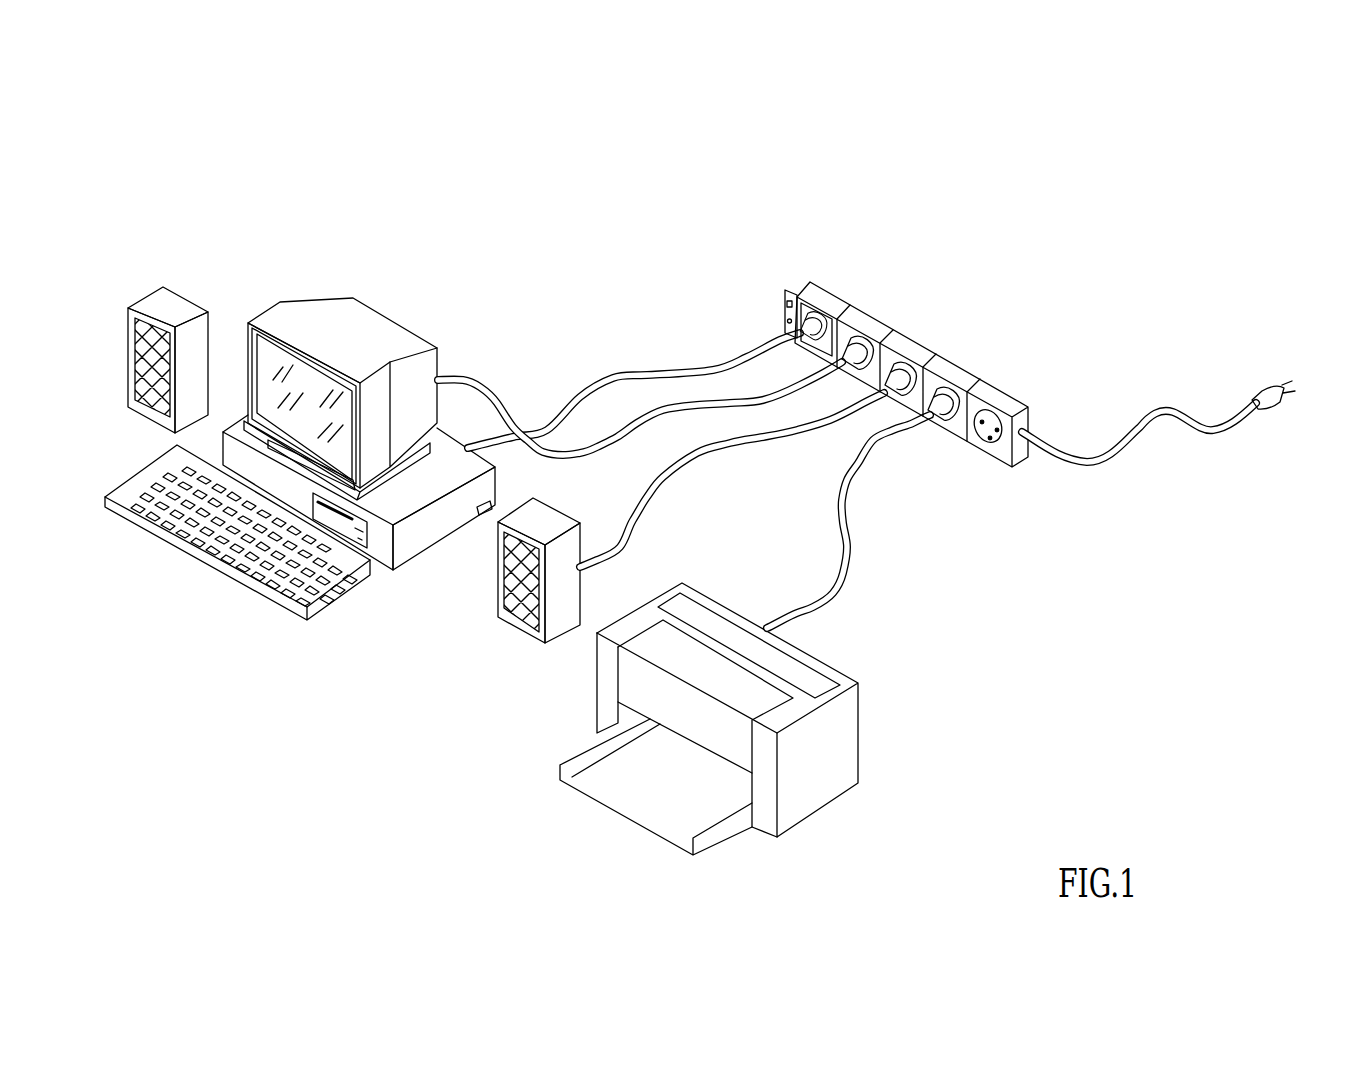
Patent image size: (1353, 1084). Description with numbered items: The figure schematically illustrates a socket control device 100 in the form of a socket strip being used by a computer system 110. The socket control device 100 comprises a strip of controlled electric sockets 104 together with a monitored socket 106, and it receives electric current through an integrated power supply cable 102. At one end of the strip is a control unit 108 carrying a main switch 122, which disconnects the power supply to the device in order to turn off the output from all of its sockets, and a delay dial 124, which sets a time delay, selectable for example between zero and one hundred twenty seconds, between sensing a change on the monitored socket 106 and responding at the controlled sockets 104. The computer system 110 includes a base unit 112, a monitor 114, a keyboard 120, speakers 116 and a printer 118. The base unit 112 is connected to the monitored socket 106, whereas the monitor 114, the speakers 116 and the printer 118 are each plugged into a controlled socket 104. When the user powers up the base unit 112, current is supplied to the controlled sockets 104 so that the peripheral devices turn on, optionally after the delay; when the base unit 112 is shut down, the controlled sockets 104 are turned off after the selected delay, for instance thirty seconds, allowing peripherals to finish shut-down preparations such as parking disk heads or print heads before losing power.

The socket control device 100 is at (948, 303).
The integrated power supply cable 102 is at (1162, 406).
The controlled electric sockets 104 is at (1002, 388).
The monitored socket 106 is at (830, 300).
The control unit 108 is at (786, 279).
The computer system 110 is at (613, 230).
The base unit 112 is at (417, 535).
The monitor 114 is at (372, 328).
The speakers 116 is at (560, 613).
The printer 118 is at (605, 700).
The keyboard 120 is at (257, 585).
The main switch 122 is at (789, 302).
The delay dial 124 is at (790, 330).